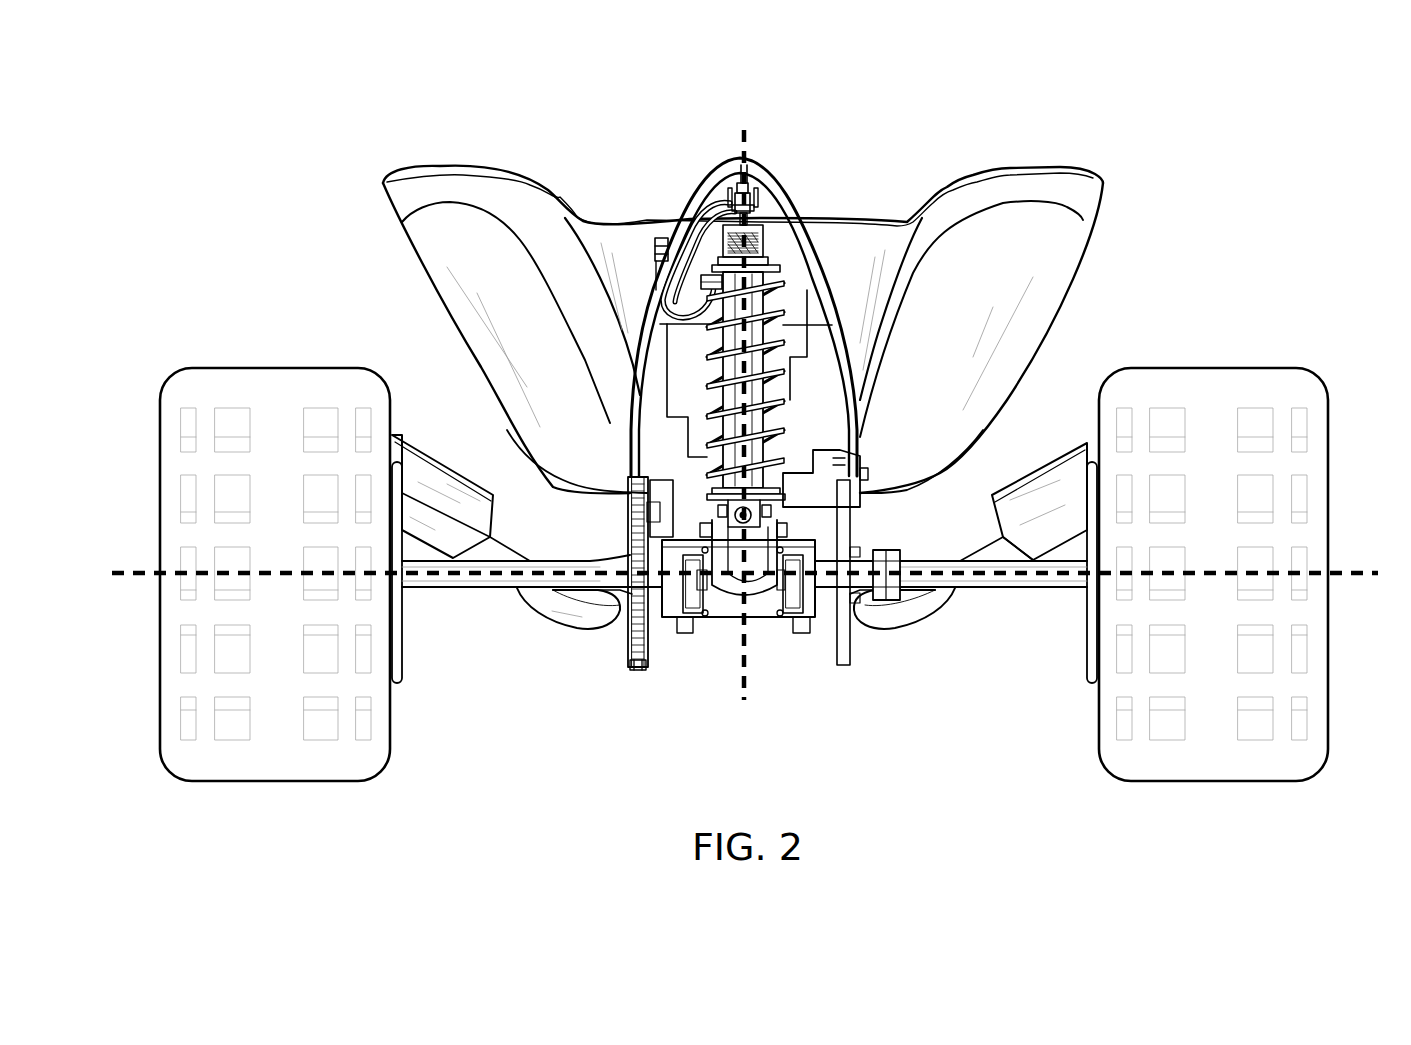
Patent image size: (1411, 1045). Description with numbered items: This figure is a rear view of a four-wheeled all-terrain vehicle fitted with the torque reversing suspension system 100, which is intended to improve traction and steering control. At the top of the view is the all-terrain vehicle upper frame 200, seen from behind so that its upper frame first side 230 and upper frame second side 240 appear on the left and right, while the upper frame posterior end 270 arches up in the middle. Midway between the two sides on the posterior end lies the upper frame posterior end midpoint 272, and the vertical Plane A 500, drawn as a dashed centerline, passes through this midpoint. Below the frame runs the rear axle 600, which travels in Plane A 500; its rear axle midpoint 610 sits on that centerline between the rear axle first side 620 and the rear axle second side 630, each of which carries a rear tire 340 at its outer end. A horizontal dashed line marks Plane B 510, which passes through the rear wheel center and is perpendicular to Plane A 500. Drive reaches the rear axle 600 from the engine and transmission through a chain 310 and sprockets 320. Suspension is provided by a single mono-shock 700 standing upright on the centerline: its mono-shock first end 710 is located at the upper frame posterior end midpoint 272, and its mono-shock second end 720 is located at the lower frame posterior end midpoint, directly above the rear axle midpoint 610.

The torque reversing suspension system 100 is at (328, 138).
The all-terrain vehicle upper frame 200 is at (828, 278).
The upper frame first side 230 is at (668, 297).
The upper frame second side 240 is at (827, 333).
The upper frame posterior end 270 is at (700, 177).
The upper frame posterior end midpoint 272 is at (745, 180).
The chain 310 is at (637, 667).
The sprockets 320 is at (628, 620).
The rear tire 340 is at (205, 393).
The Plane A 500 is at (748, 693).
The Plane B 510 is at (1352, 573).
The rear axle 600 is at (950, 605).
The rear axle midpoint 610 is at (745, 575).
The rear axle first side 620 is at (407, 583).
The rear axle second side 630 is at (1075, 580).
The mono-shock 700 is at (769, 323).
The mono-shock first end 710 is at (760, 208).
The mono-shock second end 720 is at (722, 542).